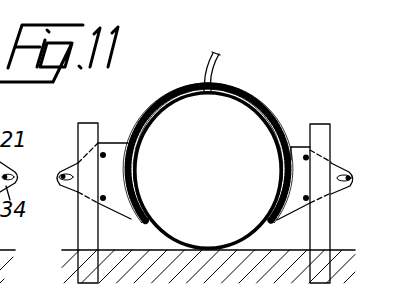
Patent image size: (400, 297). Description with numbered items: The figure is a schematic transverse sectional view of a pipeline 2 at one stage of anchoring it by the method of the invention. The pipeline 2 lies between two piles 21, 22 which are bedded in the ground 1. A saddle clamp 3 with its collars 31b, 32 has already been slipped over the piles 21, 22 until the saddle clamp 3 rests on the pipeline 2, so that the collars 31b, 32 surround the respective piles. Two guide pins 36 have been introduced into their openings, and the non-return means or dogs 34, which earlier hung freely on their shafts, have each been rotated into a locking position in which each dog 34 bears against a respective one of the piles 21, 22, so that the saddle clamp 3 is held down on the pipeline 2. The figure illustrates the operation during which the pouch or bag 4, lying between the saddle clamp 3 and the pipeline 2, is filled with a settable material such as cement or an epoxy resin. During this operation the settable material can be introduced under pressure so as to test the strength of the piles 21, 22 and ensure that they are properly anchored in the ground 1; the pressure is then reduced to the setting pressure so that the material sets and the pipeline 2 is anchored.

The ground 1 is at (271, 272).
The pipeline 2 is at (208, 171).
The saddle clamp 3 is at (238, 100).
The pouch or bag 4 is at (260, 108).
The pile 21 is at (321, 136).
The pile 22 is at (87, 223).
The collar 31b is at (295, 146).
The collar 32 is at (114, 143).
The non-return means or dogs 34 is at (69, 172).
The guide pins 36 is at (103, 155).